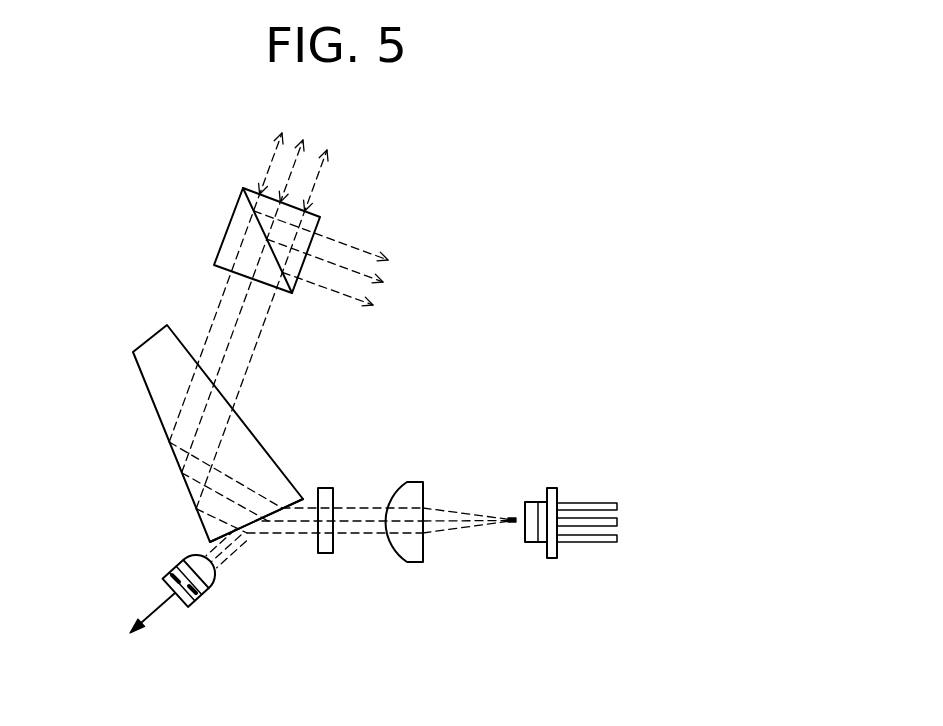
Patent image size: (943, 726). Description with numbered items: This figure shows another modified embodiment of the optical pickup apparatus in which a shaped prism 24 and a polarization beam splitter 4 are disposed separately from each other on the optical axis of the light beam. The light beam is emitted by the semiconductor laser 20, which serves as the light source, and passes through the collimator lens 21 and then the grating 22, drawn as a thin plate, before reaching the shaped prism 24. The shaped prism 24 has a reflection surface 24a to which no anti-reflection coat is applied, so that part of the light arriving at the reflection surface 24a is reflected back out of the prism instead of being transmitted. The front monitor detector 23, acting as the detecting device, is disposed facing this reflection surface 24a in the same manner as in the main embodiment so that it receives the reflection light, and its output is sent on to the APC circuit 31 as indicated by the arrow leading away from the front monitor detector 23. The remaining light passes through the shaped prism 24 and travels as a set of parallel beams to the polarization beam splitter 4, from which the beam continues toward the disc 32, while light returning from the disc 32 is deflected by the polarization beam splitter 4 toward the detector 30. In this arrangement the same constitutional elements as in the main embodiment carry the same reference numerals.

The polarization beam splitter 4 is at (233, 222).
The shaped prism 24 is at (148, 388).
The reflection surface 24a is at (250, 533).
The front monitor detector 23 is at (176, 568).
The grating 22 is at (325, 488).
The collimator lens 21 is at (405, 482).
The semiconductor laser 20 is at (543, 490).
The disc 32 is at (288, 304).
The detector 30 is at (405, 264).
The APC circuit 31 is at (123, 630).